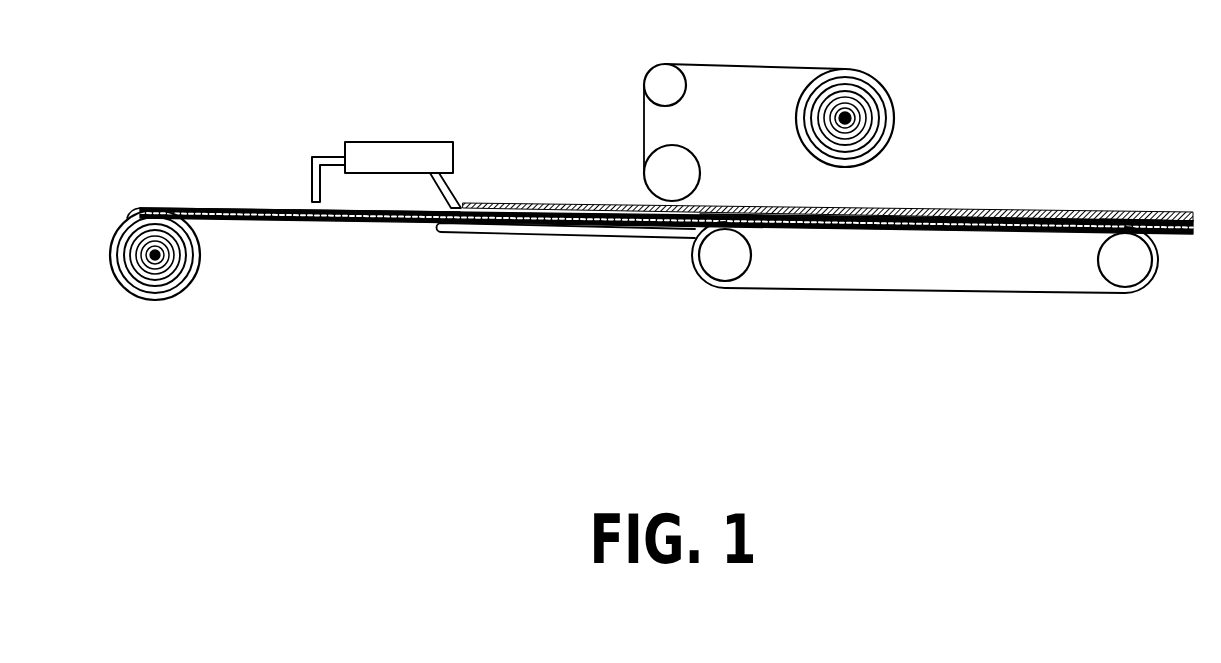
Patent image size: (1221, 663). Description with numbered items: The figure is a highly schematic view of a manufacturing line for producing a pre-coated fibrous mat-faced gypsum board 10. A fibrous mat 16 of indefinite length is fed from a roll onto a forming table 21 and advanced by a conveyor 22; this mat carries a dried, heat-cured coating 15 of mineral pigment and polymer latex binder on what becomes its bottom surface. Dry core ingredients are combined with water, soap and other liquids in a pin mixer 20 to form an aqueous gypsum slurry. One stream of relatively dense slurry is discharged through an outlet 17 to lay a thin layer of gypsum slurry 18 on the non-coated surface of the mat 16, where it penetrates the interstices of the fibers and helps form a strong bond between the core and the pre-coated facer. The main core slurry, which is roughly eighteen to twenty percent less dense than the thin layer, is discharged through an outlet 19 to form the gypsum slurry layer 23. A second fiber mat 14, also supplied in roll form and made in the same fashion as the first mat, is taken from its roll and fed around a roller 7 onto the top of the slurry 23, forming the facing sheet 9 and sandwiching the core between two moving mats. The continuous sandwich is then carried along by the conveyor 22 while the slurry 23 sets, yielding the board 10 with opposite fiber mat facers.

The roller 7 is at (702, 175).
The facing sheet 9 is at (928, 208).
The gypsum board 10 is at (1107, 207).
The fiber mat 14 is at (643, 108).
The coating 15 is at (360, 219).
The fibrous mat 16 is at (243, 219).
The outlet 17 is at (311, 178).
The thin layer of gypsum slurry 18 is at (359, 210).
The outlet 19 is at (458, 194).
The pin mixer 20 is at (407, 158).
The forming table 21 is at (480, 234).
The conveyor 22 is at (815, 290).
The gypsum slurry 23 is at (616, 204).